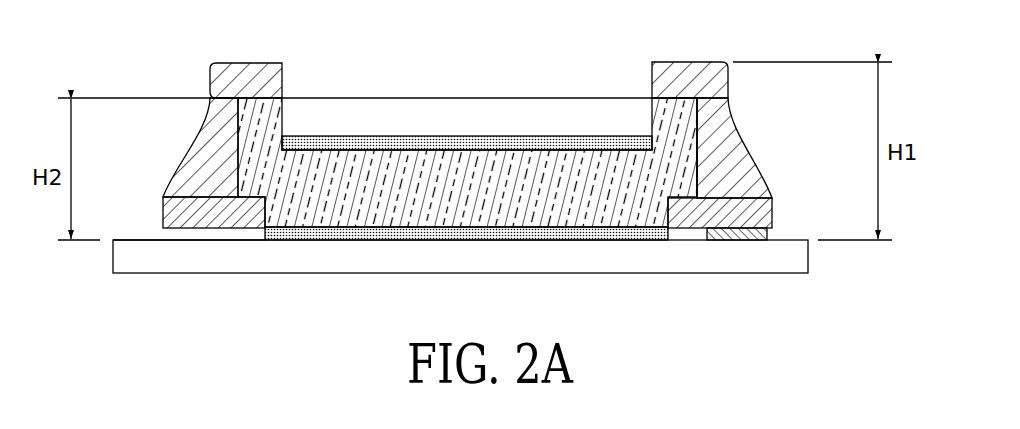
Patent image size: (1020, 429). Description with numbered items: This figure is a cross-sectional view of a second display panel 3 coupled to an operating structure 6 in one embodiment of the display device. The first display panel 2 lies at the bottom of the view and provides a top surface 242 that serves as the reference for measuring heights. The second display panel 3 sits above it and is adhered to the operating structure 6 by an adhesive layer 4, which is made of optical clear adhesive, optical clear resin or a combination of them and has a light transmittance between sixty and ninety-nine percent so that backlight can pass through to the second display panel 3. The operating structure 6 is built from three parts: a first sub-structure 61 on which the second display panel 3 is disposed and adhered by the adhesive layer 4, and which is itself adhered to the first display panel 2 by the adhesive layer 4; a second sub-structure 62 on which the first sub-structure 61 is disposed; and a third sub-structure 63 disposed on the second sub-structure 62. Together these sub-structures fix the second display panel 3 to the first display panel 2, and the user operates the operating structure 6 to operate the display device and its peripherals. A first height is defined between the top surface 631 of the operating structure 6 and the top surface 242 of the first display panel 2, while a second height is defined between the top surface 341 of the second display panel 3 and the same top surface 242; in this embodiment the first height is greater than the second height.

The first display panel 2 is at (798, 258).
The top surface of the first display panel 242 is at (131, 240).
The second display panel 3 is at (330, 117).
The top surface of the second display panel 341 is at (555, 98).
The adhesive layer 4 is at (460, 143).
The operating structure 6 is at (829, 137).
The first sub-structure 61 is at (688, 138).
The second sub-structure 62 is at (757, 212).
The third sub-structure 63 is at (737, 158).
The top surface of the operating structure 631 is at (697, 62).